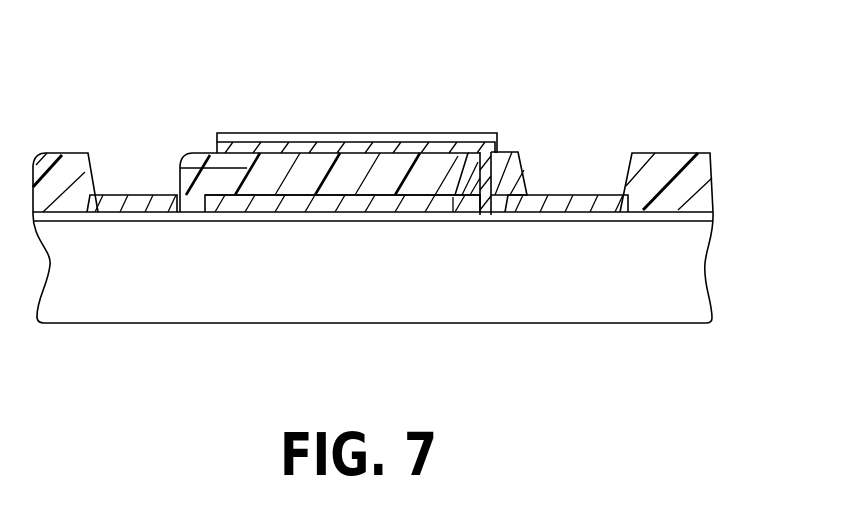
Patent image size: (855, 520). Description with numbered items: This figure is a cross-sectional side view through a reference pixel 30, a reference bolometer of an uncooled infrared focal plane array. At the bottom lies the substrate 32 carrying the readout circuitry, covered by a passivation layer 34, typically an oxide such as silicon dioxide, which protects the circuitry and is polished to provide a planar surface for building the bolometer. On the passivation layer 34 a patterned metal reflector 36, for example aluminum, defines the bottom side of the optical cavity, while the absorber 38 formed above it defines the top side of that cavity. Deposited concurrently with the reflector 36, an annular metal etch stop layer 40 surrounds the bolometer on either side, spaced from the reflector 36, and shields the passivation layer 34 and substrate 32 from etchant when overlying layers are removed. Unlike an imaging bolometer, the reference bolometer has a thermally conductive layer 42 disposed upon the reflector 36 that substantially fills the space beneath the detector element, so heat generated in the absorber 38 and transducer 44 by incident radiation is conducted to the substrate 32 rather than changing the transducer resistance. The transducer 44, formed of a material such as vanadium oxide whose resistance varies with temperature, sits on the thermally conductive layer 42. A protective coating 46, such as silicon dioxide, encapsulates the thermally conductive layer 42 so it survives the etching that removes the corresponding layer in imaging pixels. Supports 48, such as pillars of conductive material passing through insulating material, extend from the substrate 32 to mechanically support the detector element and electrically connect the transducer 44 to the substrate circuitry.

The reference pixel 30 is at (500, 100).
The substrate 32 is at (692, 272).
The passivation layer 34 is at (718, 212).
The reflector 36 is at (345, 196).
The absorber 38 is at (285, 133).
The etch stop layer 40 is at (135, 193).
The thermally conductive layer 42 is at (209, 180).
The transducer 44 is at (390, 146).
The protective coating 46 is at (520, 163).
The supports 48 is at (453, 197).